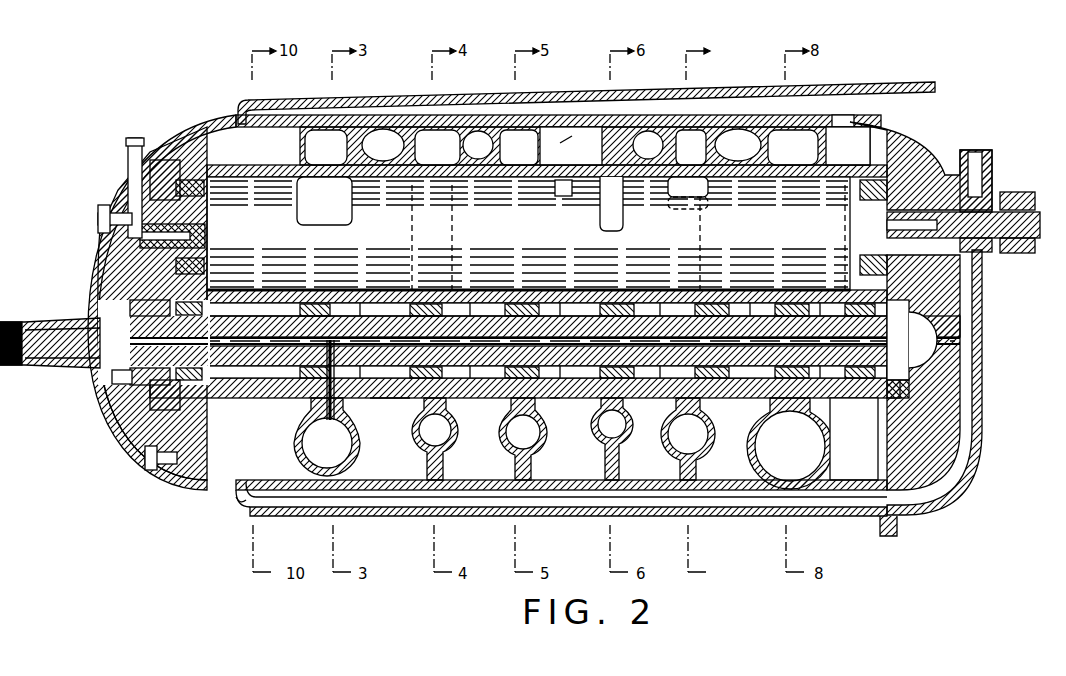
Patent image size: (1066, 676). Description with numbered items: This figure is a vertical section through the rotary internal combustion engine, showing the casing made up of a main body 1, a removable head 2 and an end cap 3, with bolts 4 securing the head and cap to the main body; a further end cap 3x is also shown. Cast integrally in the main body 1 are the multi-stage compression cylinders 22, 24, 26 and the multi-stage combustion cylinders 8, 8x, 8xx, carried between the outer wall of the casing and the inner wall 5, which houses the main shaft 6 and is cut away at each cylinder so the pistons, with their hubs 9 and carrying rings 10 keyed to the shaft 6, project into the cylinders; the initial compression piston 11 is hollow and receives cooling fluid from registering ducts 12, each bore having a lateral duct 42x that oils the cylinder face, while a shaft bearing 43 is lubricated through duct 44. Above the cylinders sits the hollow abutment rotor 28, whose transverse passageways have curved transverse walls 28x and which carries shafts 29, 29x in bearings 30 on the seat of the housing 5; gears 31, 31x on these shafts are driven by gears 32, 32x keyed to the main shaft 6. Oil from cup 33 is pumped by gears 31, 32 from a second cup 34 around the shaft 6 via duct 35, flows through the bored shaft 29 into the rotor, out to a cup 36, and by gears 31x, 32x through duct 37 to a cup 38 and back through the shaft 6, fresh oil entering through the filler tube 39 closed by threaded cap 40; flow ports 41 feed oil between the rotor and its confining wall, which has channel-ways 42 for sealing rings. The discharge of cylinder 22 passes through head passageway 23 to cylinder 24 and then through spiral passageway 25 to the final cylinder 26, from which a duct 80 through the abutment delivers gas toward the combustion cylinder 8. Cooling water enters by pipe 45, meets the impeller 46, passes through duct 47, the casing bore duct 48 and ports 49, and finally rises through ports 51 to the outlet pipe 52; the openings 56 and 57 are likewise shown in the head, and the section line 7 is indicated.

The main body 1 is at (232, 495).
The removable head 2 is at (128, 152).
The end cap 3 is at (100, 293).
The end cap 3x is at (940, 440).
The bolts 4 is at (100, 215).
The inner wall 5 is at (258, 398).
The main shaft 6 is at (530, 330).
The section line 7 is at (718, 312).
The first combustion cylinder 8 is at (598, 440).
The combustion cylinder 8x is at (668, 456).
The combustion cylinder 8xx is at (745, 460).
The hubs 9 is at (410, 400).
The carrying rings 10 is at (470, 395).
The initial compression piston 11 is at (340, 500).
The ducts 12 is at (362, 410).
The first compression cylinder 22 is at (298, 451).
The casing head passageway 23 is at (383, 145).
The compression cylinder 24 is at (414, 446).
The spiral passageway 25 is at (490, 142).
The final compression cylinder 26 is at (511, 439).
The abutment rotor 28 is at (278, 243).
The curved transverse wall 28x is at (303, 218).
The shaft 29 is at (173, 236).
The shaft 29x is at (1020, 200).
The bearings 30 is at (190, 178).
The gear 31 is at (150, 178).
The gear 31x is at (900, 195).
The gear 32 is at (150, 388).
The gear 32x is at (905, 382).
The oil-receiving cup 33 is at (130, 250).
The receiving cup 34 is at (128, 378).
The duct 35 is at (80, 321).
The cup 36 is at (938, 200).
The duct 37 is at (935, 308).
The cup 38 is at (940, 340).
The filler tube 39 is at (160, 140).
The threaded cap 40 is at (128, 142).
The flow ports 41 is at (252, 190).
The channel-ways 42 is at (392, 178).
The lateral duct 42x is at (262, 420).
The shaft bearing 43 is at (562, 400).
The duct 44 is at (565, 352).
The pipe 45 is at (985, 150).
The water pump or impeller 46 is at (975, 262).
The duct 47 is at (965, 418).
The casing bore duct 48 is at (566, 509).
The ports 49 is at (600, 516).
The ports 51 is at (322, 127).
The outlet pipe 52 is at (720, 87).
The upper passage 56 is at (662, 140).
The upper passage 57 is at (762, 143).
The duct 80 is at (563, 196).